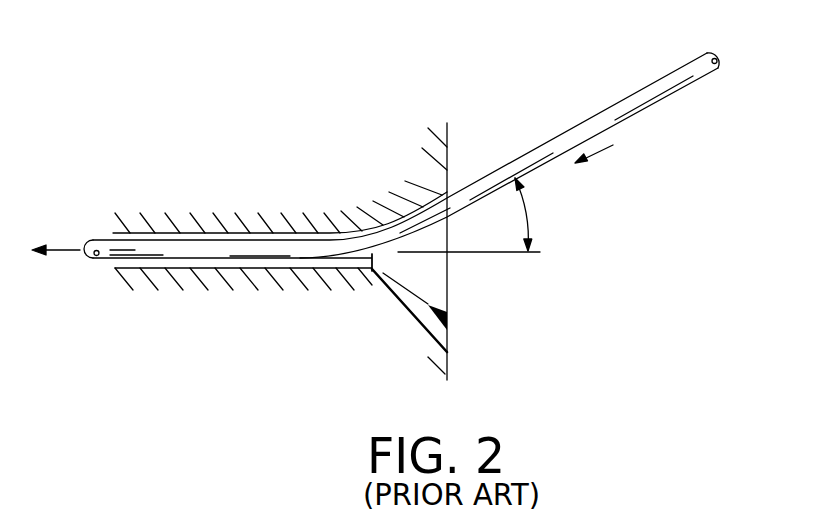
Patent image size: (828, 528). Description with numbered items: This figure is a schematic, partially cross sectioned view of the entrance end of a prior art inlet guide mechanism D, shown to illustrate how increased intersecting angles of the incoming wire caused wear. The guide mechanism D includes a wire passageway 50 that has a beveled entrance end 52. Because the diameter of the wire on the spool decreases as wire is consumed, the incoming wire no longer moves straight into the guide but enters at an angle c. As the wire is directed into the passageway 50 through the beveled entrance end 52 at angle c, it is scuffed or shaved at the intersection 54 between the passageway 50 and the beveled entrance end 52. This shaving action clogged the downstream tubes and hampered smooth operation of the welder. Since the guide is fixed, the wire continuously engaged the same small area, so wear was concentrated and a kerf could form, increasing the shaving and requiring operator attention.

The prior art inlet guide mechanism D is at (462, 121).
The wire passageway 50 is at (256, 267).
The beveled entrance end 52 is at (435, 310).
The intersection 54 is at (373, 262).
The angle c is at (525, 211).